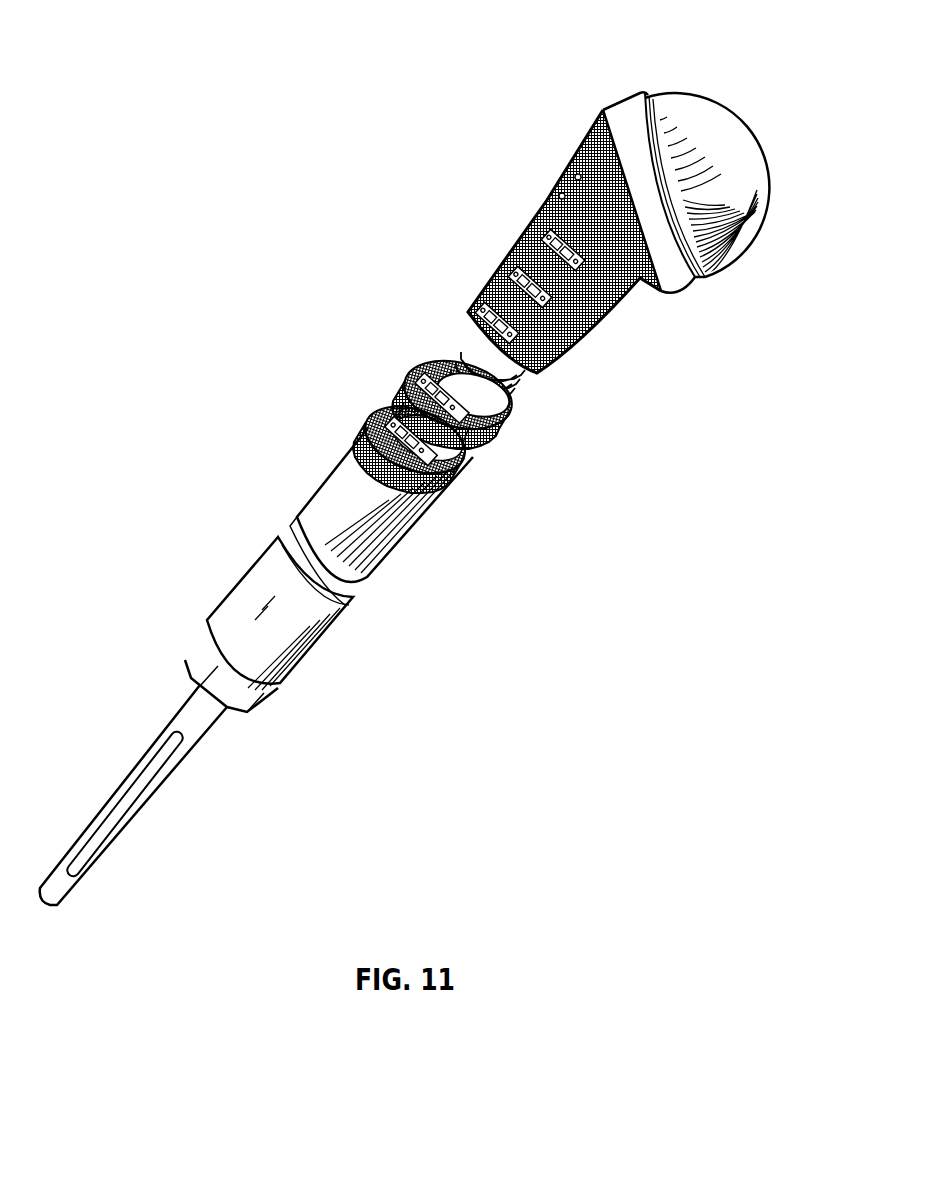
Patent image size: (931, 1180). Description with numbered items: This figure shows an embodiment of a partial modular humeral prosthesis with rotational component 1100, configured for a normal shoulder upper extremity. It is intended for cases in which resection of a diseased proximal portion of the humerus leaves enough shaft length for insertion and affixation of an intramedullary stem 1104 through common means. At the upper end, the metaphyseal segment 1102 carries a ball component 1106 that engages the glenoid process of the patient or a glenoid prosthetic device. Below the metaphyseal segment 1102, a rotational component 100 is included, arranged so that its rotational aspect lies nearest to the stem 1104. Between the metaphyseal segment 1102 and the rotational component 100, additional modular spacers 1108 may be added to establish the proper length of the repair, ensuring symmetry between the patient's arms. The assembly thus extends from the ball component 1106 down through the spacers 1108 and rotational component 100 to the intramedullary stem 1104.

The partial modular humeral prosthesis with rotational component 1100 is at (455, 68).
The ball component 1106 is at (696, 103).
The metaphyseal segment 1102 is at (578, 334).
The modular spacers 1108 is at (470, 343).
The rotational component 100 is at (340, 473).
The intramedullary stem 1104 is at (185, 716).